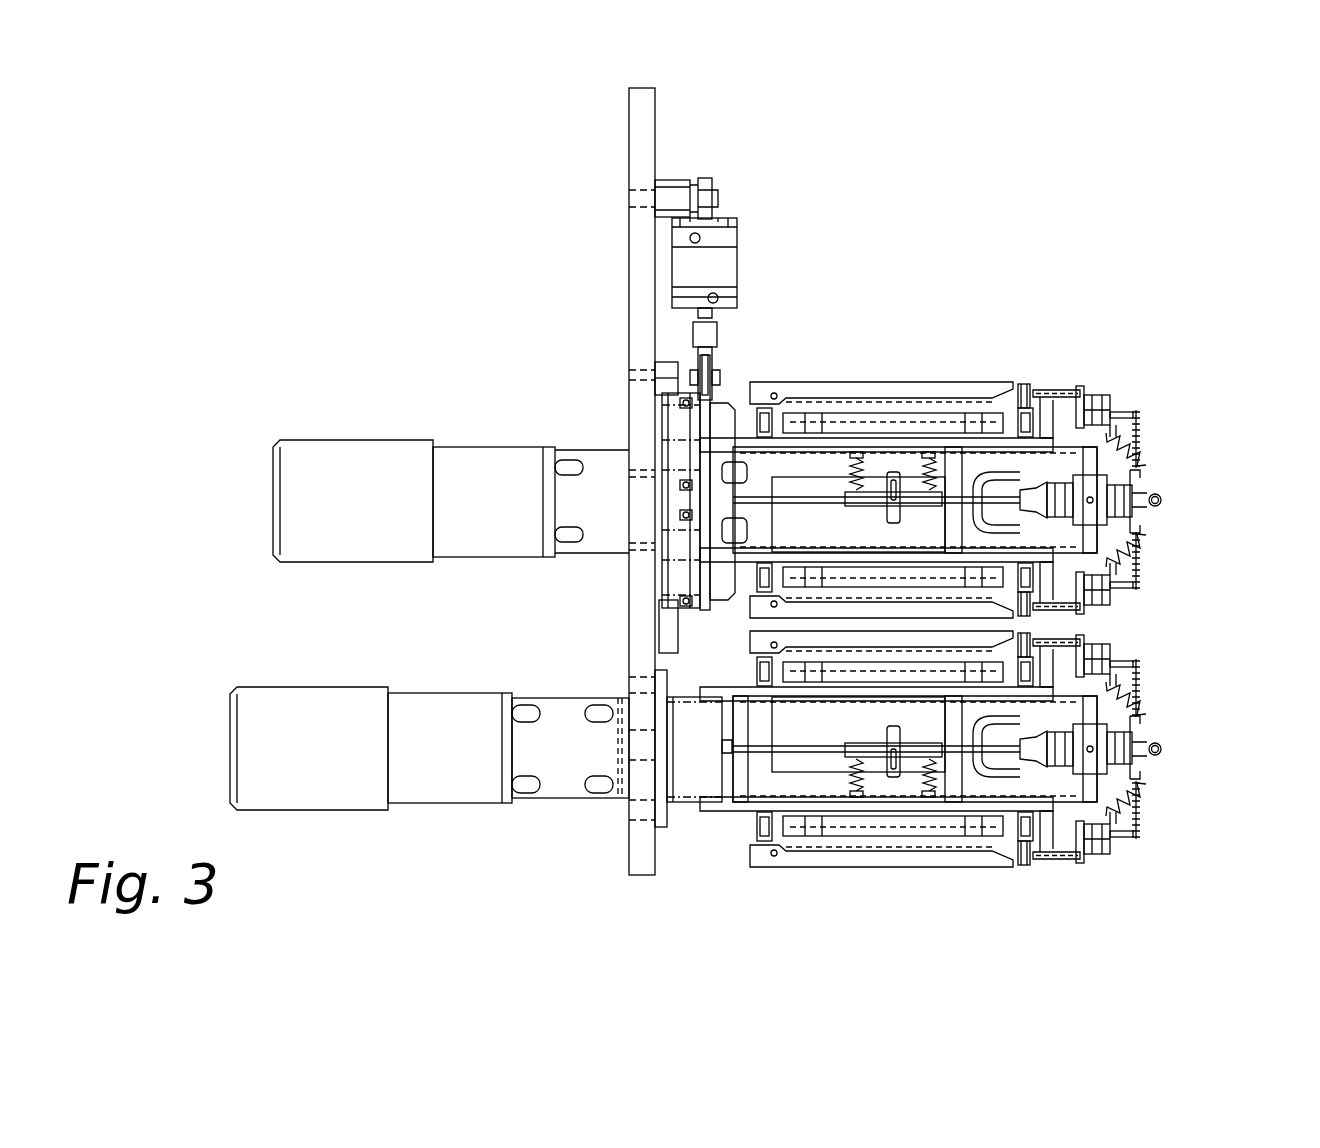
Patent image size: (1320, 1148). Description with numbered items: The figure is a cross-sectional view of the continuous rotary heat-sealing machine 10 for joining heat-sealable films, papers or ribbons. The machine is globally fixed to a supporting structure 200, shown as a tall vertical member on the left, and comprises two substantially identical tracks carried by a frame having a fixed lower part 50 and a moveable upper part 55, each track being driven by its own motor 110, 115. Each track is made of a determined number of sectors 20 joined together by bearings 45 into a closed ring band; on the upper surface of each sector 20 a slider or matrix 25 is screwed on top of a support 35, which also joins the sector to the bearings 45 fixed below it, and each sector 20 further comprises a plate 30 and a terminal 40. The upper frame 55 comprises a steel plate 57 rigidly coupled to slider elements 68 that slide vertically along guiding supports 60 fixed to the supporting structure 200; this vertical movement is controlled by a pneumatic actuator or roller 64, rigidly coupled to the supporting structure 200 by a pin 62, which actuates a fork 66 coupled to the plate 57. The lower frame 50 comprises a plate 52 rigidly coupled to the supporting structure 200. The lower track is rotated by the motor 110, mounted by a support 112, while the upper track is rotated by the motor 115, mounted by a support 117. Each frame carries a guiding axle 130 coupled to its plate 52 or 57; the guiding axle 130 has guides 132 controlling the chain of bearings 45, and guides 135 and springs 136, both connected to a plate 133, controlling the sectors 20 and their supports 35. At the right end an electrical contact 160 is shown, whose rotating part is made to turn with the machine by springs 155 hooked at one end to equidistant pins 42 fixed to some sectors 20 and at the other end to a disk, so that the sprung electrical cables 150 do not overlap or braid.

The continuous rotary heat-sealing machine 10 is at (1054, 226).
The sector 20 is at (838, 378).
The slider or matrix 25 is at (910, 390).
The plate 30 is at (1040, 398).
The support 35 is at (985, 395).
The terminal 40 is at (1100, 400).
The pin 42 is at (1112, 412).
The bearing 45 is at (765, 410).
The fixed lower part of the frame 50 is at (684, 822).
The plate 52 is at (652, 812).
The moveable upper part of the frame 55 is at (679, 334).
The plate 57 is at (720, 410).
The guiding support 60 is at (671, 375).
The pin 62 is at (671, 192).
The pneumatic actuator or roller 64 is at (706, 268).
The fork 66 is at (707, 333).
The slider element 68 is at (690, 437).
The motor 110 is at (290, 730).
The support 112 is at (560, 752).
The motor 115 is at (340, 484).
The support 117 is at (600, 492).
The guiding axle 130 is at (734, 527).
The guide 132 is at (1060, 548).
The plate 133 is at (1082, 405).
The guide 135 is at (885, 505).
The spring 136 is at (868, 470).
The sprung electrical cable 150 is at (1142, 452).
The spring 155 is at (1140, 432).
The electrical contact 160 is at (1174, 500).
The supporting structure 200 is at (641, 148).